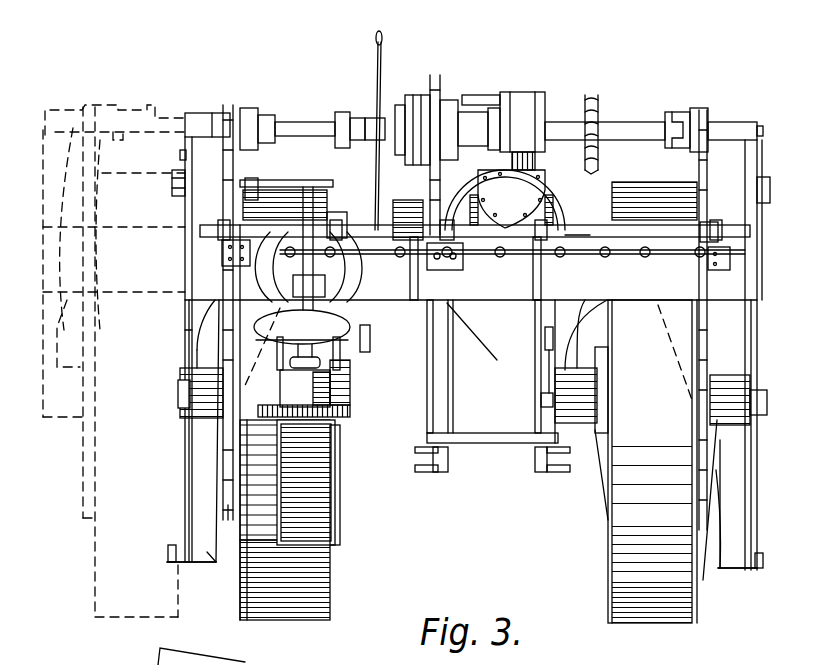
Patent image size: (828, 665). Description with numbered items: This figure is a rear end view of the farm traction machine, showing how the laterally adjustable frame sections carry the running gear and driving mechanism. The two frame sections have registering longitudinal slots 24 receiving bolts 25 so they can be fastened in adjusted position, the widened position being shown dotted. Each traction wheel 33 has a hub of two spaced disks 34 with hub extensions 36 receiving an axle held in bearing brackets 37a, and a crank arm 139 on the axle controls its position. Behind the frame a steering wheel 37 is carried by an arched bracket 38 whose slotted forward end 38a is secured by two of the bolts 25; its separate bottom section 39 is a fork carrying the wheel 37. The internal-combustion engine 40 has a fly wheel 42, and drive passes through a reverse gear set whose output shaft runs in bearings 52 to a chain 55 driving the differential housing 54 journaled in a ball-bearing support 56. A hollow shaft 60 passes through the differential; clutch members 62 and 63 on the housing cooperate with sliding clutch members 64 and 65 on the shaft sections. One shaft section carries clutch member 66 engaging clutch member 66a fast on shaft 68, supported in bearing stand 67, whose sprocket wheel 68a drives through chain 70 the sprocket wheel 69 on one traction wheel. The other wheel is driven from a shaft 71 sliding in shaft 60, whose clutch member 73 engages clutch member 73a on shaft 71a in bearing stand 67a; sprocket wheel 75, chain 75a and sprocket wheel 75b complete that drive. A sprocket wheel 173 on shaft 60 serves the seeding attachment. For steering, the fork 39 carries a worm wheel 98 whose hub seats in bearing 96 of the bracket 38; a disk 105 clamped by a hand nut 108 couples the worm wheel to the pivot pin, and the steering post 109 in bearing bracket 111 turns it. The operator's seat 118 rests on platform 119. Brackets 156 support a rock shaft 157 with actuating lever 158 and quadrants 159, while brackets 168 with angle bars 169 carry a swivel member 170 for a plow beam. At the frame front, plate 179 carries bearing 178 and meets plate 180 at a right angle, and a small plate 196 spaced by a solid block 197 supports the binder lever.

The longitudinal slots 24 is at (585, 258).
The bolts 25 is at (572, 236).
The traction wheels 33 is at (240, 598).
The disks 34 is at (600, 372).
The hub extension 36 is at (185, 420).
The steering wheel 37 is at (320, 585).
The bearing brackets 37a is at (184, 330).
The arched bracket 38 is at (325, 283).
The forward end of bracket 38a is at (340, 200).
The bottom section 39 is at (342, 488).
The internal-combustion engine 40 is at (530, 92).
The fly wheel 42 is at (545, 205).
The bearings 52 is at (393, 208).
The housing 54 is at (415, 95).
The chain 55 is at (437, 78).
The ball-bearing support 56 is at (452, 100).
The hollow shaft 60 is at (628, 122).
The clutch member 62 is at (475, 112).
The clutch member 63 is at (372, 118).
The clutch member 64 is at (496, 108).
The clutch member 65 is at (342, 112).
The clutch member 66 is at (677, 112).
The clutch member 66a is at (699, 108).
The bearing stand 67 is at (708, 242).
The bearing stand 67a is at (184, 158).
The shaft 68 is at (732, 122).
The sprocket wheel 68a is at (705, 110).
The sprocket wheel 69 is at (714, 514).
The chain 70 is at (700, 170).
The shaft 71 is at (305, 122).
The shaft 71a is at (220, 113).
The clutch member 73 is at (268, 115).
The clutch member 73a is at (248, 108).
The sprocket wheel 75 is at (230, 108).
The chain 75a is at (262, 190).
The sprocket wheel 75b is at (222, 500).
The bearing 96 is at (340, 428).
The worm wheel 98 is at (305, 460).
The disk 105 is at (350, 405).
The hand nut 108 is at (210, 358).
The steering post 109 is at (335, 183).
The bearing bracket 111 is at (325, 290).
The seat 118 is at (370, 338).
The platform 119 is at (320, 360).
The crank arm 139 is at (400, 340).
The brackets 156 is at (440, 268).
The rock shaft 157 is at (533, 262).
The actuating lever 158 is at (380, 32).
The quadrants 159 is at (517, 290).
The brackets 168 is at (433, 398).
The angle bars 169 is at (540, 428).
The swivel member 170 is at (545, 472).
The sprocket wheel 173 is at (592, 95).
The bearing 178 is at (172, 190).
The plate 179 is at (700, 440).
The plate 180 is at (207, 552).
The small plate 196 is at (168, 550).
The solid block 197 is at (168, 562).